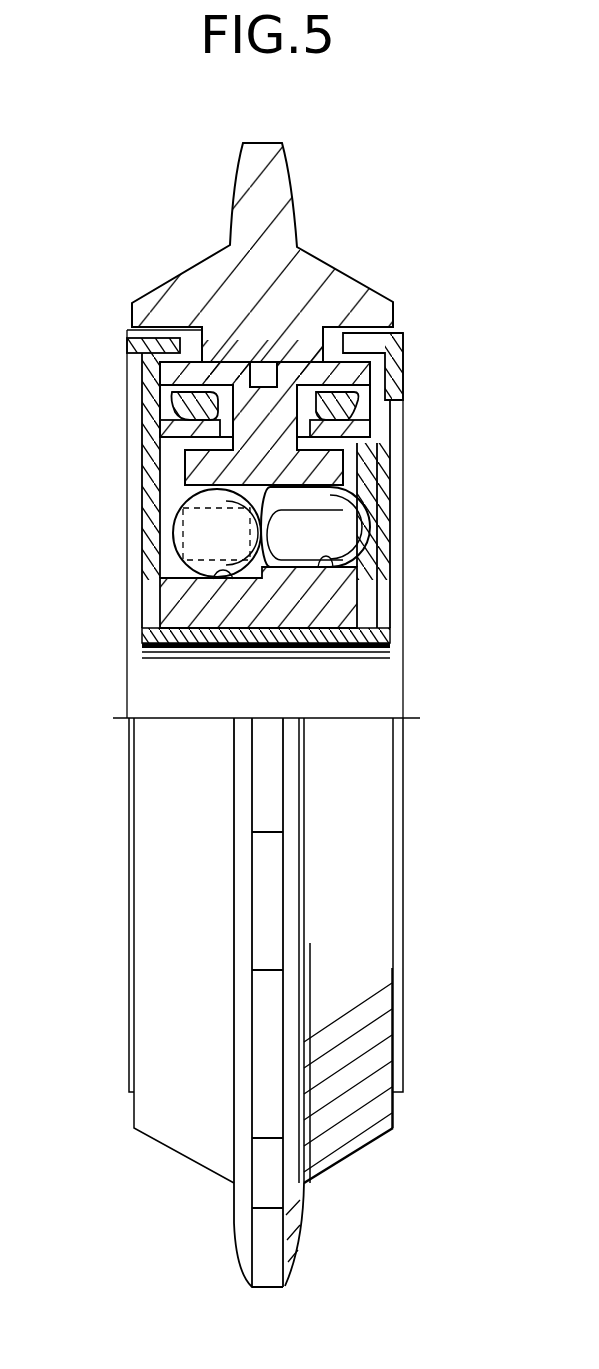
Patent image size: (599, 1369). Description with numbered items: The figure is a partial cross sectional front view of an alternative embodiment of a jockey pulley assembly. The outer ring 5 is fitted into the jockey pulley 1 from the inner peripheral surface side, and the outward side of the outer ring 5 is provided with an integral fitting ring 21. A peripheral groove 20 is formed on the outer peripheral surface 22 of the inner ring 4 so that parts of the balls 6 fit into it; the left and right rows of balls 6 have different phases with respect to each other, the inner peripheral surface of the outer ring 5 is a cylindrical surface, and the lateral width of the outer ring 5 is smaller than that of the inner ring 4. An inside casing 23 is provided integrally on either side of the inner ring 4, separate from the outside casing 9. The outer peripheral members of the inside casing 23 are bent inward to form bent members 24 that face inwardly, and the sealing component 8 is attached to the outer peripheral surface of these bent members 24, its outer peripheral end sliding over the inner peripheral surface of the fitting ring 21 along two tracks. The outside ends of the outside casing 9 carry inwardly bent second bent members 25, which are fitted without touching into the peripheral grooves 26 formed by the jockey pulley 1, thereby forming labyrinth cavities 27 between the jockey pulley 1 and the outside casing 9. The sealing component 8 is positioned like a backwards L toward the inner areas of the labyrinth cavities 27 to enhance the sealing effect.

The jockey pulley 1 is at (215, 270).
The inner ring 4 is at (180, 598).
The outer ring 5 is at (345, 485).
The balls 6 is at (180, 530).
The sealing component 8 is at (178, 408).
The outside casing 9 is at (370, 636).
The peripheral groove 20 is at (228, 580).
The fitting ring 21 is at (305, 360).
The outer peripheral surface 22 is at (333, 567).
The inside casing 23 is at (360, 556).
The bent members 24 is at (175, 452).
The second bent members 25 is at (403, 333).
The peripheral grooves 26 is at (128, 330).
The labyrinth cavities 27 is at (142, 372).